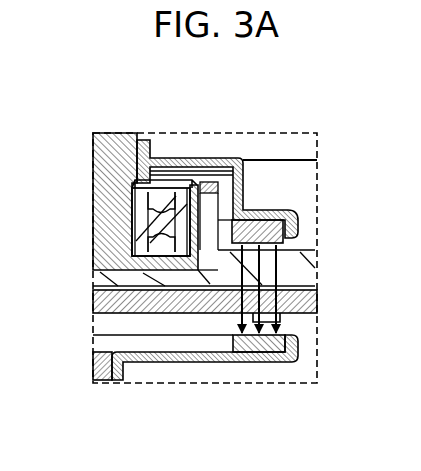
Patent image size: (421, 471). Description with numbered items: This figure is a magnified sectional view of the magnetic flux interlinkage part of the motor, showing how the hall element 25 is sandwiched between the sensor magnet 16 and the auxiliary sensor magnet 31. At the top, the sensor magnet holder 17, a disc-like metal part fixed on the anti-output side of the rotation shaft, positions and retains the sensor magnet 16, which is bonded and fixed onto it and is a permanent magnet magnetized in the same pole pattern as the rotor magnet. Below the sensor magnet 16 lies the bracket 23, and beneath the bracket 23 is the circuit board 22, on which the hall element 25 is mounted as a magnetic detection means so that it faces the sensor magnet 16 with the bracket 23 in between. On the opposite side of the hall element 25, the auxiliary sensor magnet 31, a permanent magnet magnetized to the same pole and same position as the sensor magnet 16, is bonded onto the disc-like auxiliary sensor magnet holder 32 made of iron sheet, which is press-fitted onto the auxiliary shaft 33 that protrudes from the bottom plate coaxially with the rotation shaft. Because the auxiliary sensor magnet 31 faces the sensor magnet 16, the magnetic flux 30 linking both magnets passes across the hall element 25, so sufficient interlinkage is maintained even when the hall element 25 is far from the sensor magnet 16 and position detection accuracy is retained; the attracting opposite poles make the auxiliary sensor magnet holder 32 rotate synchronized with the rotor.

The sensor magnet holder 17 is at (240, 158).
The sensor magnet 16 is at (263, 230).
The magnetic flux 30 is at (273, 270).
The bracket 23 is at (283, 281).
The circuit board 22 is at (117, 305).
The hall element 25 is at (280, 320).
The auxiliary shaft 33 is at (99, 368).
The auxiliary sensor magnet holder 32 is at (204, 358).
The auxiliary sensor magnet 31 is at (267, 345).